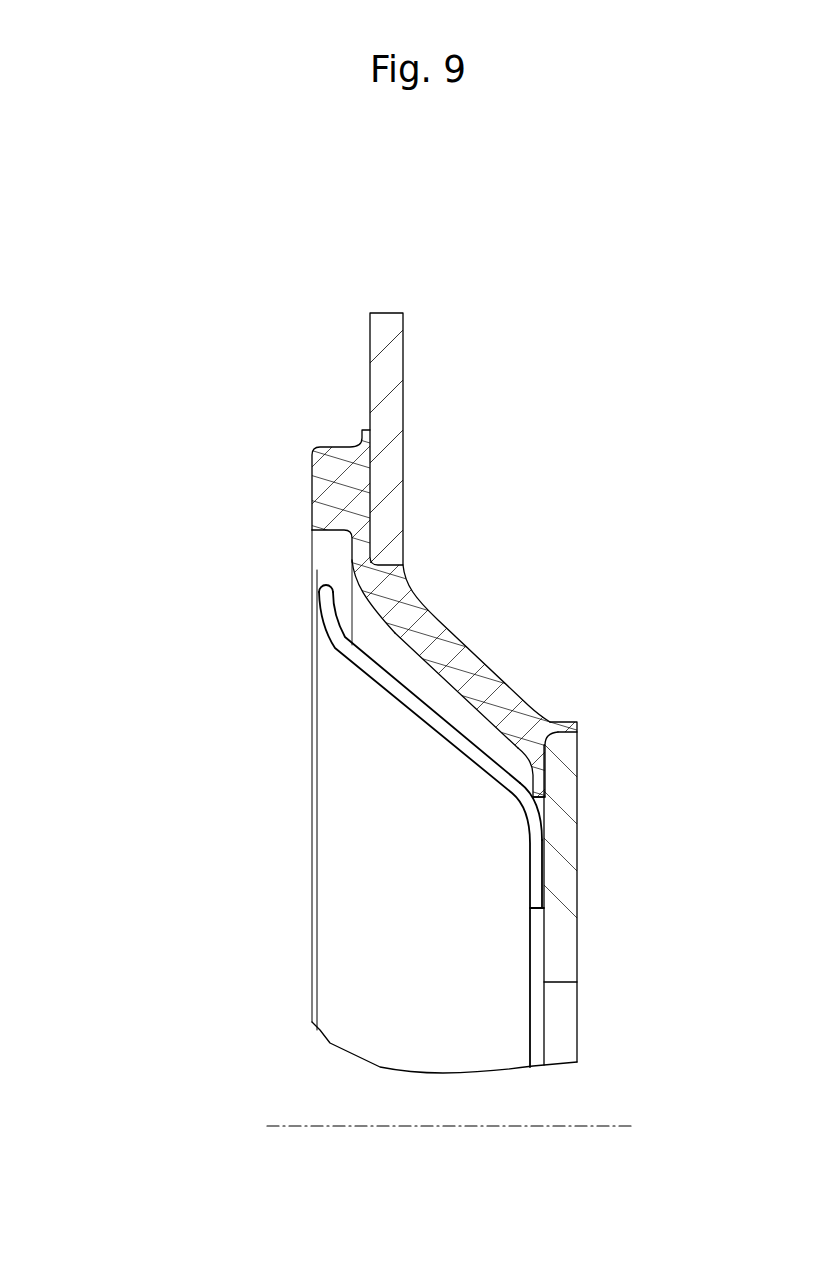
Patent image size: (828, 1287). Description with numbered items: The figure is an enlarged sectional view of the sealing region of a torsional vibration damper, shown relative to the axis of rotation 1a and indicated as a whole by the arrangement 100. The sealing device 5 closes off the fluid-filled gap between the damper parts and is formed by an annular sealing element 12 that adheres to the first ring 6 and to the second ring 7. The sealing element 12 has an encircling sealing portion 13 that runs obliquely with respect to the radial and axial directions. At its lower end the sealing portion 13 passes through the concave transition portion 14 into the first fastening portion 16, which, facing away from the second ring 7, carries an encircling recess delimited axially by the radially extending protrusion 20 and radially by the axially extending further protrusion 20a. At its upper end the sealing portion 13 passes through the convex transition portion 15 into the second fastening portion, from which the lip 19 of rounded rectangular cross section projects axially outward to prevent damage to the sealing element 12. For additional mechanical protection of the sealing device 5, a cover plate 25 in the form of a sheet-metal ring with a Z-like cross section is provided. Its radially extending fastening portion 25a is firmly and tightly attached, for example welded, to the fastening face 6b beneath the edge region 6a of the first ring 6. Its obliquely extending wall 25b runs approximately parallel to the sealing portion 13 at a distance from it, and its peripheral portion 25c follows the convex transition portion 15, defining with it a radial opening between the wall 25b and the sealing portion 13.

The sealing arrangement 100 is at (363, 288).
The second ring 7 is at (383, 322).
The annular sealing element 12 is at (442, 621).
The lip 19 is at (327, 492).
The convex transition portion 15 is at (372, 583).
The sealing portion 13 is at (408, 622).
The concave transition portion 14 is at (531, 750).
The encircling protrusion 20 is at (538, 775).
The further encircling protrusion 20a is at (563, 728).
The sealing device 5 is at (110, 700).
The cover plate 25 is at (342, 842).
The peripheral portion 25c is at (322, 594).
The obliquely extending wall 25b is at (408, 706).
The fastening portion 25a is at (540, 876).
The first fastening portion 16 is at (536, 787).
The first ring 6 is at (563, 893).
The edge region 6a is at (538, 771).
The fastening face 6b is at (542, 929).
The axis of rotation 1a is at (613, 1126).